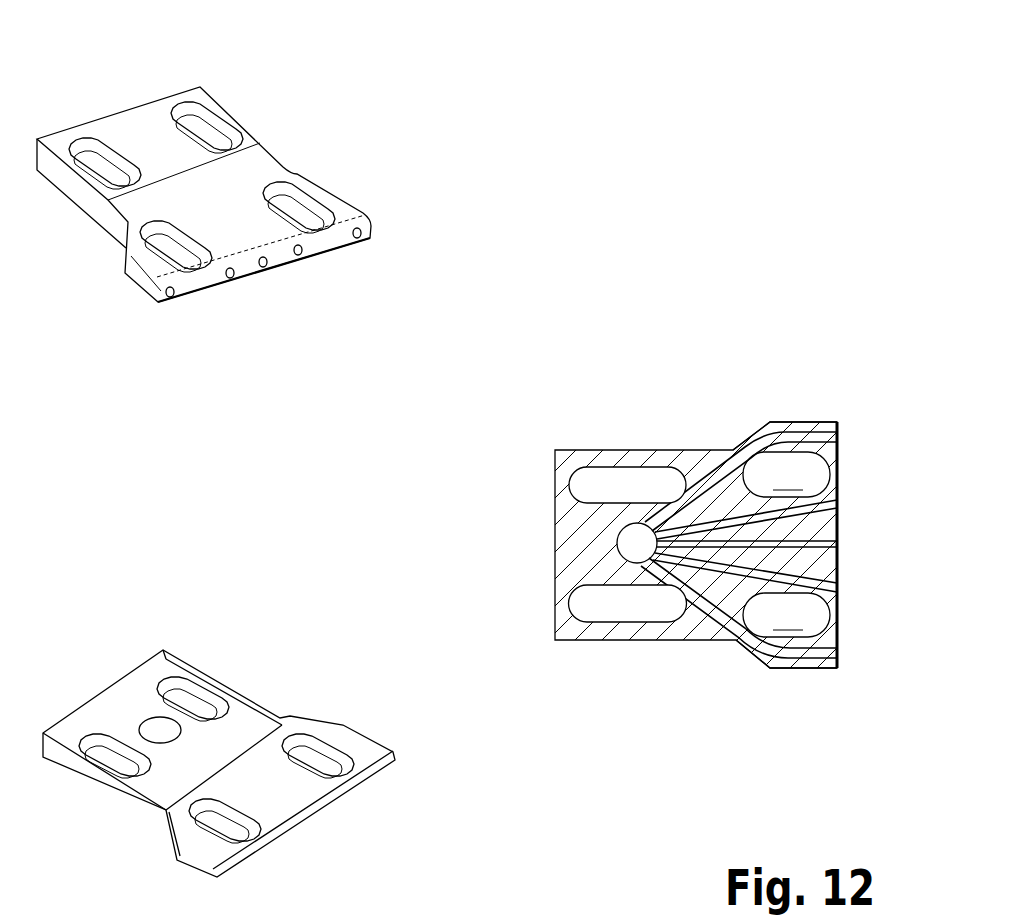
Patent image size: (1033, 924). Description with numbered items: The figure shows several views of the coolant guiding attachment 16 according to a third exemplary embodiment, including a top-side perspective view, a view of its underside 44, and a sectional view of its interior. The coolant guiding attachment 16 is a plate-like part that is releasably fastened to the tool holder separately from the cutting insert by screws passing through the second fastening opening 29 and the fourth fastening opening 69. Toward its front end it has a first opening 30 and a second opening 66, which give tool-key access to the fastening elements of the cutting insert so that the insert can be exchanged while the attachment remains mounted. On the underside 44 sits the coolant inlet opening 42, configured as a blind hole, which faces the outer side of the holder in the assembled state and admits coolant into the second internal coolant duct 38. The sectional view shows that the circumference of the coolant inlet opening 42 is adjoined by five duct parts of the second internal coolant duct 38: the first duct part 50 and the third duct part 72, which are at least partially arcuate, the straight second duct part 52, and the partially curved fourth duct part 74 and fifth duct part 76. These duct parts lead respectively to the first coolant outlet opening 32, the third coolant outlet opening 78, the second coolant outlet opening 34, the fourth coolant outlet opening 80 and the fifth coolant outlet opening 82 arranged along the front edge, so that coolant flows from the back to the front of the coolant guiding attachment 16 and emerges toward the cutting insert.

The coolant guiding attachment 16 is at (258, 168).
The second fastening opening 29 is at (92, 148).
The fourth fastening opening 69 is at (198, 113).
The second opening 66 is at (307, 210).
The first opening 30 is at (143, 256).
The first coolant outlet opening 32 is at (174, 298).
The fourth coolant outlet opening 80 is at (233, 279).
The second coolant outlet opening 34 is at (266, 268).
The fifth coolant outlet opening 82 is at (302, 256).
The third coolant outlet opening 78 is at (360, 239).
The coolant inlet opening 42 is at (157, 725).
The underside 44 is at (240, 733).
The second duct part 52 is at (668, 510).
The fifth duct part 76 is at (722, 523).
The third duct part 72 is at (787, 427).
The fourth duct part 74 is at (730, 565).
The second internal coolant duct 38 is at (678, 588).
The first duct part 50 is at (790, 668).